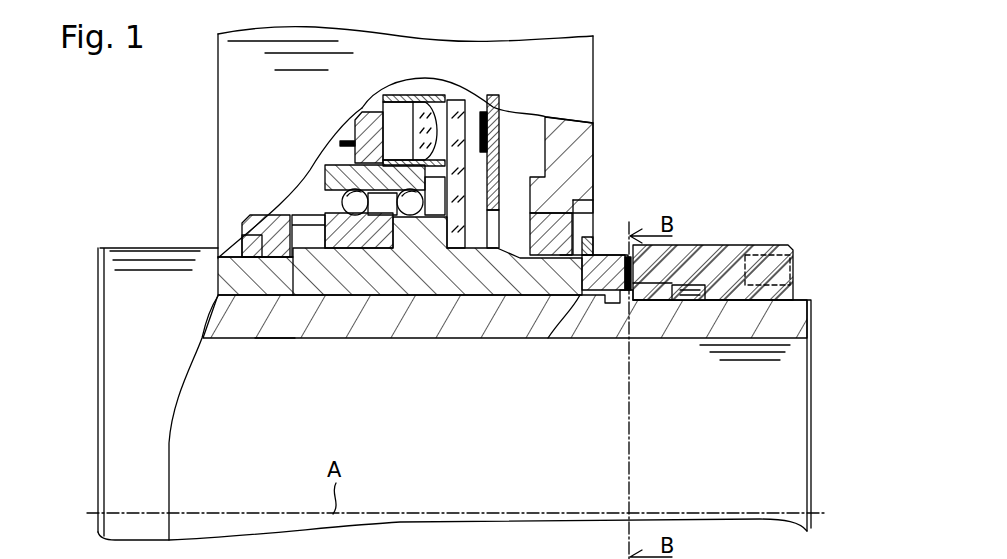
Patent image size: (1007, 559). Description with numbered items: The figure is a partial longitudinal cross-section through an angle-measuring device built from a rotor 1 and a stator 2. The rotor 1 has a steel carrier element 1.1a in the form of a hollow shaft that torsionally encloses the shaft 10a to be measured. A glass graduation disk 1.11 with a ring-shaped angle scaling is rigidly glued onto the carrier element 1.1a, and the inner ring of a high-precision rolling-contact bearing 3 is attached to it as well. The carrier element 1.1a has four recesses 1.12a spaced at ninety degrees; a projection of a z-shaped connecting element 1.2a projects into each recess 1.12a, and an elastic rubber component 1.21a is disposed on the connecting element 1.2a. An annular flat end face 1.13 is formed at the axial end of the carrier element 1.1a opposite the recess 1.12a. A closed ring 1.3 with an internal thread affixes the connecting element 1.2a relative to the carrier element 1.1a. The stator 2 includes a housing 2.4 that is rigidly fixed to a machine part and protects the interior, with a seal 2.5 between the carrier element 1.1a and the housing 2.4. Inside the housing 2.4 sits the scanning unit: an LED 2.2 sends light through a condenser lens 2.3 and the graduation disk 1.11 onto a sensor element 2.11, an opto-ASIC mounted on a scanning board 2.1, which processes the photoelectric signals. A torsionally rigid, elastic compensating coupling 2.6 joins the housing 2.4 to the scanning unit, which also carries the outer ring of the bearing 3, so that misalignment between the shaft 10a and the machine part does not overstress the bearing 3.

The rotor 1 is at (735, 201).
The carrier element 1.1a is at (236, 257).
The graduation disk 1.11 is at (455, 100).
The recess 1.12a is at (548, 338).
The annular flat end face 1.13 is at (224, 280).
The connecting element 1.2a is at (618, 304).
The elastic component 1.21a is at (638, 302).
The ring 1.3 is at (793, 247).
The stator 2 is at (608, 119).
The scanning board 2.1 is at (498, 108).
The sensor element 2.11 is at (492, 95).
The LED 2.2 is at (352, 145).
The condenser lens 2.3 is at (405, 96).
The housing 2.4 is at (593, 168).
The seal 2.5 is at (586, 213).
The compensating coupling 2.6 is at (275, 340).
The rolling-contact bearing 3 is at (325, 192).
The shaft 10a is at (230, 340).